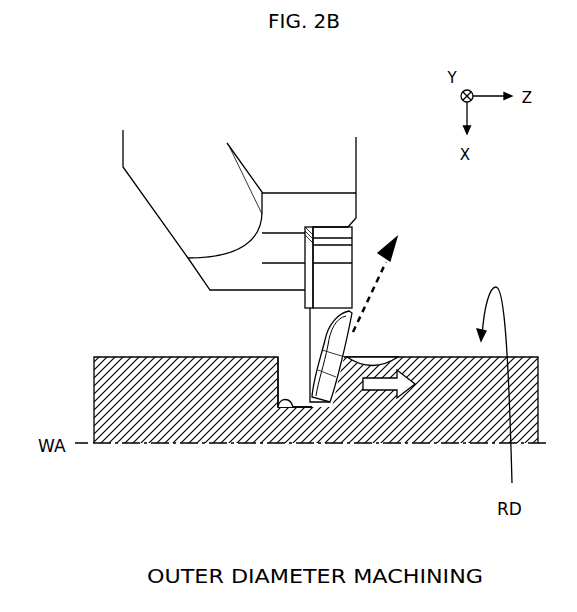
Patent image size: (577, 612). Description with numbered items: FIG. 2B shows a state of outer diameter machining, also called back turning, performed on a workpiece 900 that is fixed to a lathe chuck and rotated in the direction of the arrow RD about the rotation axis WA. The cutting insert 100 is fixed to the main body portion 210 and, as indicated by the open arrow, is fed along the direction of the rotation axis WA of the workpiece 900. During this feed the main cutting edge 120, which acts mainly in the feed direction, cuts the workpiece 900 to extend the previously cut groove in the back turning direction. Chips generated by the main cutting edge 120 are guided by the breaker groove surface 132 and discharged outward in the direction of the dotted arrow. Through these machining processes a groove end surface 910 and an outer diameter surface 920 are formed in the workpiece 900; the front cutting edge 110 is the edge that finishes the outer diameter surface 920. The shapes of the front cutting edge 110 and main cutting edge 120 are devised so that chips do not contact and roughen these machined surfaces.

The cutting insert 100 is at (310, 330).
The front cutting edge 110 is at (326, 403).
The main cutting edge 120 is at (384, 362).
The breaker groove surface 132 is at (350, 355).
The main body portion 210 is at (160, 183).
The workpiece 900 is at (118, 357).
The groove end surface 910 is at (293, 372).
The outer diameter surface 920 is at (278, 405).